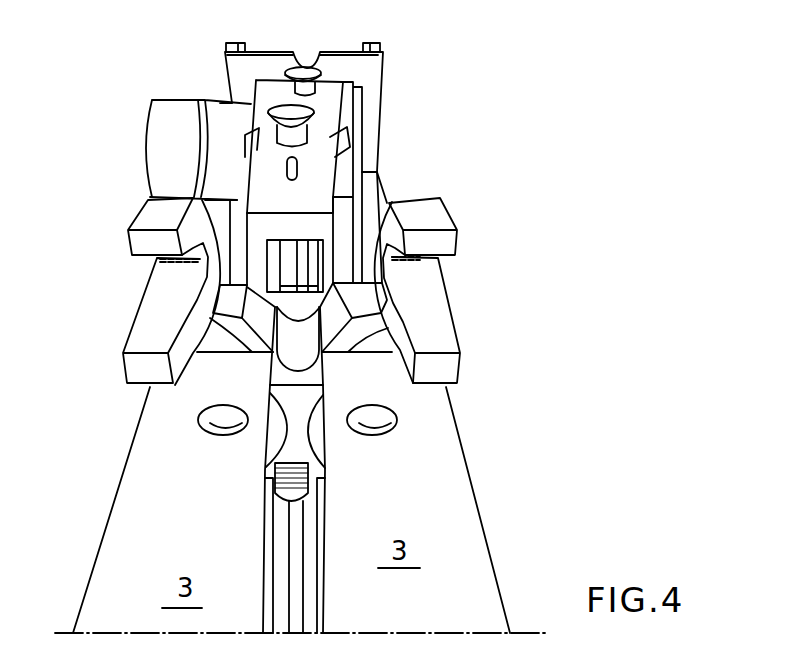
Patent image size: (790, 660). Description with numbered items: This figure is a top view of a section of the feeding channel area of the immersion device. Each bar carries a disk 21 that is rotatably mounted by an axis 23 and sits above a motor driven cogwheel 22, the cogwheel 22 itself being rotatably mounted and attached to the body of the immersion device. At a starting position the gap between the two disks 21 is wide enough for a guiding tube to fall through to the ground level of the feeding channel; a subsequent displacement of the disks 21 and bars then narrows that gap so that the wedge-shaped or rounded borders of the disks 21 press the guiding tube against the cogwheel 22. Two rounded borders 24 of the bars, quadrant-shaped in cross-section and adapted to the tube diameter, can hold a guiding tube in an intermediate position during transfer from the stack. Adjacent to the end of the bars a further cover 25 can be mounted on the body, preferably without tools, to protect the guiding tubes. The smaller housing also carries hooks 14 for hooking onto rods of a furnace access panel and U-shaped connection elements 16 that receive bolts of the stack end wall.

The hooks 14 is at (228, 53).
The U-shaped connection elements 16 is at (150, 245).
The disk 21 is at (273, 445).
The motor driven cogwheel 22 is at (303, 486).
The axis 23 is at (380, 425).
The rounded borders 24 is at (273, 562).
The further cover 25 is at (313, 158).